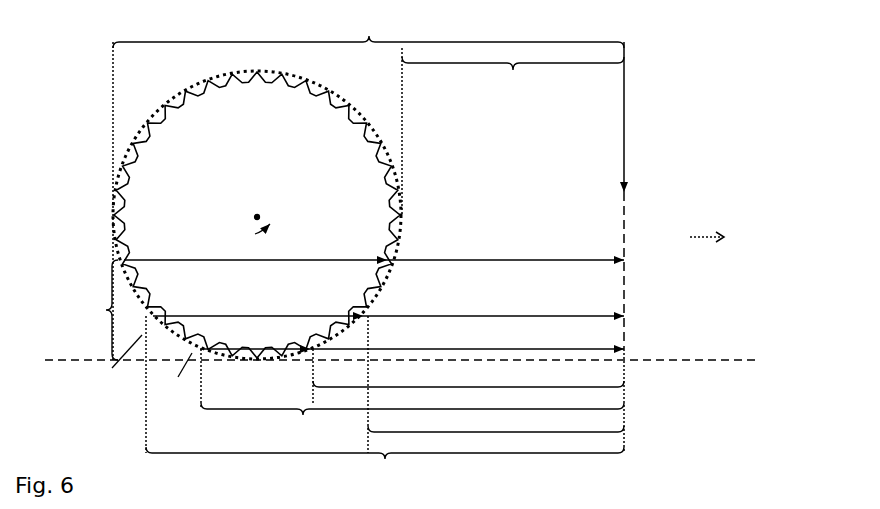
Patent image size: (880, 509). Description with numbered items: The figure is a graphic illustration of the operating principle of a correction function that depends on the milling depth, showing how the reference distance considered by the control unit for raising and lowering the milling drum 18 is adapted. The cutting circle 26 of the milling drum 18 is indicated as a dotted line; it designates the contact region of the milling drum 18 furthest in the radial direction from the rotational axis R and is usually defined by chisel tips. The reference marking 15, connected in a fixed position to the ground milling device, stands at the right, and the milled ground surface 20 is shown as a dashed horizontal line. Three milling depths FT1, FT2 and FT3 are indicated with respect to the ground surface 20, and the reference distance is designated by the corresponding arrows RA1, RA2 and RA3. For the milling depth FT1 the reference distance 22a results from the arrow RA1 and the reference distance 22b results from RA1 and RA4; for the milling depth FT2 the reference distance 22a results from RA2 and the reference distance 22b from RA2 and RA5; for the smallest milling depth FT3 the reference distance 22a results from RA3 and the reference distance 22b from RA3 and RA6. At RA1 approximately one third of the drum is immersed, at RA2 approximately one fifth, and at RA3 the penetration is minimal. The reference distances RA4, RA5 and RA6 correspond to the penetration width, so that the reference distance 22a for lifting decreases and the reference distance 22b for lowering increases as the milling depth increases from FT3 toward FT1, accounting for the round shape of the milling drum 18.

The cutting circle 26 is at (145, 120).
The milling drum 18 is at (147, 166).
The reference marking 15 is at (643, 118).
The ground surface in a milled state 20 is at (415, 365).
The reference distance for raising 22a is at (478, 470).
The reference distance for lowering 22b is at (368, 250).
The milling depth FT1 is at (86, 310).
The milling depth FT2 is at (107, 366).
The milling depth FT3 is at (171, 378).
The rotational axis R is at (260, 212).
The reference distance arrow RA1 is at (505, 247).
The reference distance arrow RA2 is at (493, 303).
The reference distance arrow RA3 is at (467, 337).
The penetration width RA4 is at (255, 247).
The penetration width RA5 is at (258, 303).
The penetration width RA6 is at (255, 336).